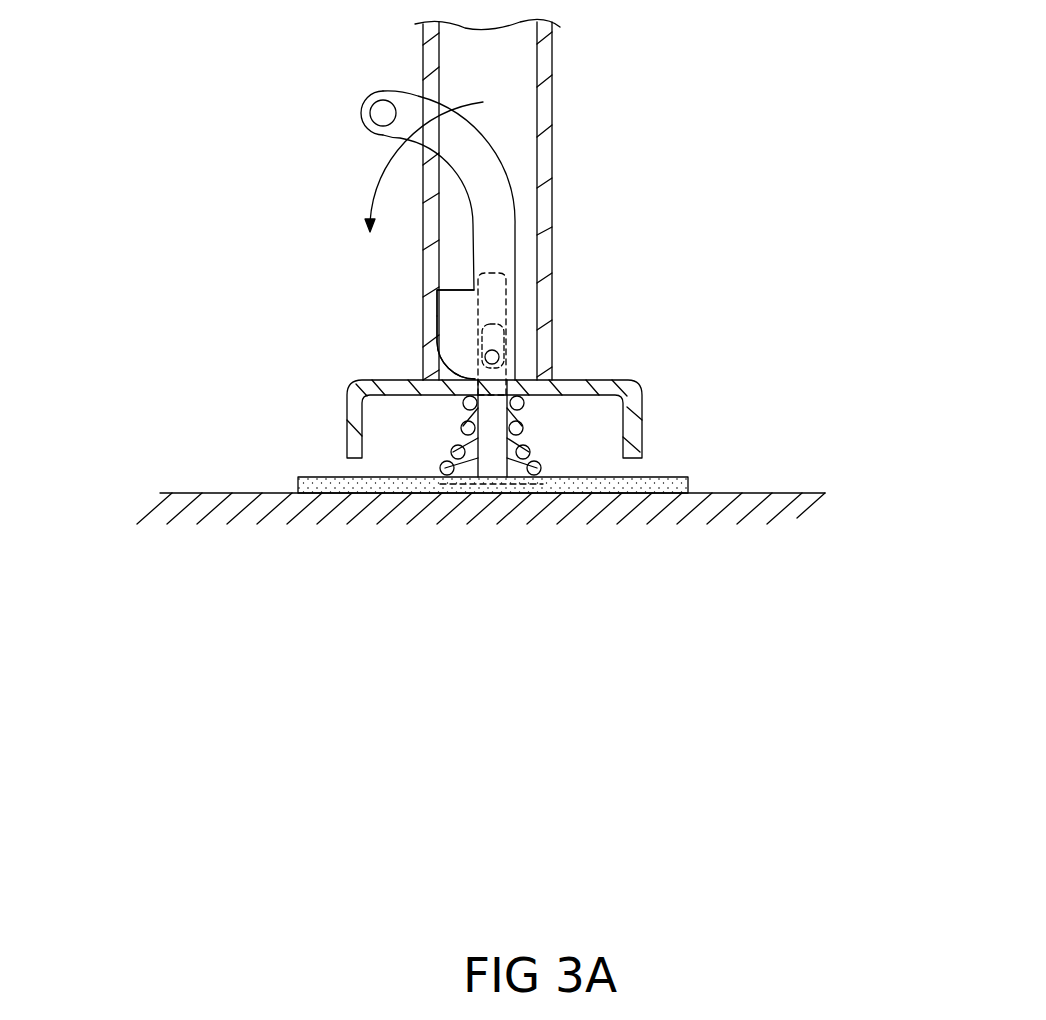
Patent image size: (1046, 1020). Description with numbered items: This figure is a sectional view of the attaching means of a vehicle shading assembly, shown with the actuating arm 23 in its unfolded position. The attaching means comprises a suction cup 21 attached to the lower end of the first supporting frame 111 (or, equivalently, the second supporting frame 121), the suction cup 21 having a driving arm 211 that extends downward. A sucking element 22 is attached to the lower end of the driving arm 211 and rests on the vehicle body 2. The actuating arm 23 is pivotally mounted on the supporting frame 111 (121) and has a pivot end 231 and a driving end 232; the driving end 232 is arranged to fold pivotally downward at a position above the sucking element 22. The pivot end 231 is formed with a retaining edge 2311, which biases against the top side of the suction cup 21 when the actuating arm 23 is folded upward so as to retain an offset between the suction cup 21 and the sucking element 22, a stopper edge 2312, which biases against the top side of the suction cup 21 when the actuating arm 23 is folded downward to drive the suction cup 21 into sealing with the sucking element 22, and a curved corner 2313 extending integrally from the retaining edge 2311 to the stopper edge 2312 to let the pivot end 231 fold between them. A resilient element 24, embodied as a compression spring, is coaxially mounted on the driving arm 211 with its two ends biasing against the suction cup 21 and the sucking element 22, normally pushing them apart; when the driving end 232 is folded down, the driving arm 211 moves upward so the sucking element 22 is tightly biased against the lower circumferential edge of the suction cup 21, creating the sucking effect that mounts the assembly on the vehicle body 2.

The vehicle body 2 is at (745, 513).
The sucking element 22 is at (640, 477).
The suction cup 21 is at (632, 420).
The driving arm 211 is at (507, 395).
The resilient element 24 is at (458, 452).
The first supporting frame 111 is at (612, 195).
The second supporting frame 121 is at (545, 105).
The actuating arm 23 is at (441, 278).
The pivot end 231 is at (446, 278).
The retaining edge 2311 is at (493, 407).
The stopper edge 2312 is at (437, 308).
The curved corner 2313 is at (440, 362).
The driving end 232 is at (385, 135).